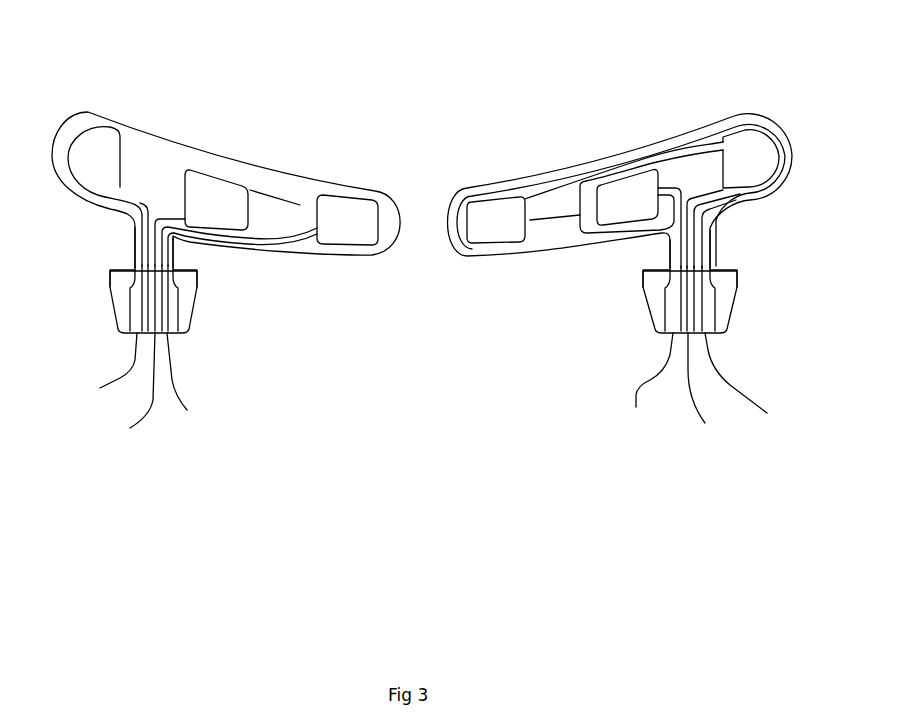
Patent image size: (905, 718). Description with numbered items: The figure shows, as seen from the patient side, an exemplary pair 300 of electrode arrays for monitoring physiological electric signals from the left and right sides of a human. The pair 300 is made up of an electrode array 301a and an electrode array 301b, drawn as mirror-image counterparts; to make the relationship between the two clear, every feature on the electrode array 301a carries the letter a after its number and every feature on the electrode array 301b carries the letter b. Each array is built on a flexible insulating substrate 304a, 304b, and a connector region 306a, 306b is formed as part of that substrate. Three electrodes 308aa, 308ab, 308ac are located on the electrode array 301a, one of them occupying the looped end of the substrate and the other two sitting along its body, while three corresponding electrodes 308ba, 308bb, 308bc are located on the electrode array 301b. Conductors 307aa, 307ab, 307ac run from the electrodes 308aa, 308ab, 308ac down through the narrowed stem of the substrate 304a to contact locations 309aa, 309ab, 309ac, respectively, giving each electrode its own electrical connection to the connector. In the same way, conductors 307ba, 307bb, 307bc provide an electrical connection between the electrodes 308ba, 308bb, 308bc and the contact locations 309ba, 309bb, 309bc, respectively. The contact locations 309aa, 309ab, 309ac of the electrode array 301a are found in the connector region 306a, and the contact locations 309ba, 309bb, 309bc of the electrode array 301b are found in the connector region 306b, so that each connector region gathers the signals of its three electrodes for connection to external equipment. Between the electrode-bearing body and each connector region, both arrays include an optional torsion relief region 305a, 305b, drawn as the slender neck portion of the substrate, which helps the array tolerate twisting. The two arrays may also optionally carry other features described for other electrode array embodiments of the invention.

The pair of electrode arrays 300 is at (429, 452).
The electrode array 301a is at (299, 346).
The electrode array 301b is at (550, 352).
The flexible insulating substrate 304a is at (280, 193).
The flexible insulating substrate 304b is at (540, 237).
The torsion relief region 305a is at (107, 229).
The torsion relief region 305b is at (737, 228).
The connector region 306a is at (107, 272).
The connector region 306b is at (737, 272).
The conductor 307aa is at (141, 200).
The conductor 307ab is at (173, 174).
The conductor 307ac is at (288, 232).
The conductor 307ba is at (610, 234).
The conductor 307bb is at (683, 173).
The conductor 307bc is at (552, 187).
The electrode 308aa is at (103, 143).
The electrode 308ab is at (218, 197).
The electrode 308ac is at (357, 217).
The electrode 308ba is at (745, 145).
The electrode 308bb is at (620, 200).
The electrode 308bc is at (490, 217).
The contact location 309aa is at (87, 364).
The contact location 309ab is at (111, 392).
The contact location 309ac is at (196, 384).
The contact location 309ba is at (642, 384).
The contact location 309bb is at (715, 392).
The contact location 309bc is at (760, 387).